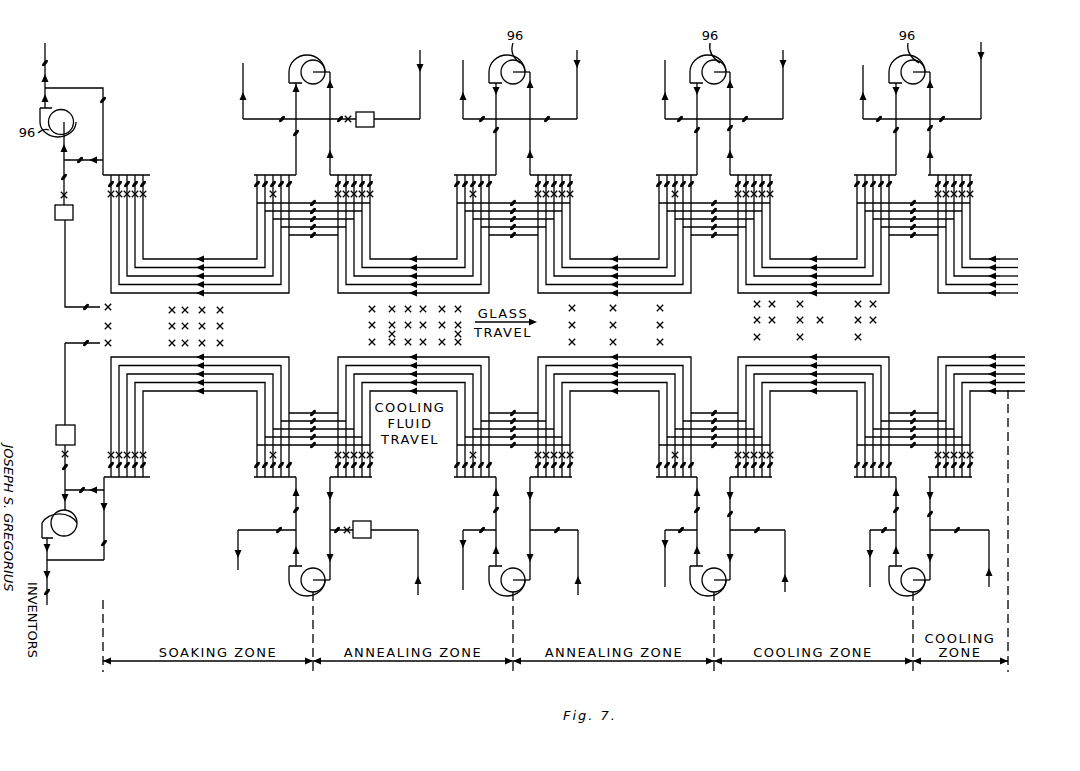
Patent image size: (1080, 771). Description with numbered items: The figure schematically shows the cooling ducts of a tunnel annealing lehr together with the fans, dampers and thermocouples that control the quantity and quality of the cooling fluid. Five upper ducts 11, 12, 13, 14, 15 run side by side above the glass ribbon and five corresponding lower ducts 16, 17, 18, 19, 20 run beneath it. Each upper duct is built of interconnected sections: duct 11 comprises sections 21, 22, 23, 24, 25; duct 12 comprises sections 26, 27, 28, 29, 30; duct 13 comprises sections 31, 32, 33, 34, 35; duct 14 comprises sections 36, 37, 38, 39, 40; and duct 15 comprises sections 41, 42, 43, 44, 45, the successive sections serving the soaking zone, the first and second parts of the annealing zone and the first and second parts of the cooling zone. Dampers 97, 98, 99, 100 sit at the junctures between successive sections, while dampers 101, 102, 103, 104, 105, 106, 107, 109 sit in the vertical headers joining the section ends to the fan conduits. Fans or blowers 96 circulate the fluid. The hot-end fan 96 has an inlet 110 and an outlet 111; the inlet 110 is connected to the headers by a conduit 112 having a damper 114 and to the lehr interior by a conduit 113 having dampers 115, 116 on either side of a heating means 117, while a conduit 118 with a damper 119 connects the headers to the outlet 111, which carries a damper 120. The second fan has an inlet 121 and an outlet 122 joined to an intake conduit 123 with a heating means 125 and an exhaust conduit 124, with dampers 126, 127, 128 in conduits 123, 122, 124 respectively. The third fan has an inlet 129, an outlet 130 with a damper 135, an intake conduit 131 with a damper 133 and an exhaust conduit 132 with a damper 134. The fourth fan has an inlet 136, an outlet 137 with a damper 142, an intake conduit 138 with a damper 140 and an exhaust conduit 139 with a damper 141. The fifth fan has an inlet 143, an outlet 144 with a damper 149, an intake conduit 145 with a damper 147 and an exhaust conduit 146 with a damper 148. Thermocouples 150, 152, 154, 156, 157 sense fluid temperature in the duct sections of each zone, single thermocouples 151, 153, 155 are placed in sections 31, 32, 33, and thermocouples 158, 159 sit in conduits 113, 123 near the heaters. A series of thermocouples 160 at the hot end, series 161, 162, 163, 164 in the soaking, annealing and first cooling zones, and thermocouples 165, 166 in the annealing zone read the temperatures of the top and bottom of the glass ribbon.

The duct 11 is at (1020, 259).
The duct 12 is at (1020, 267).
The duct 13 is at (1020, 276).
The duct 14 is at (1020, 285).
The duct 15 is at (1020, 293).
The duct 16 is at (1022, 391).
The duct 17 is at (1022, 383).
The duct 18 is at (1022, 374).
The duct 19 is at (1022, 365).
The duct 20 is at (1020, 357).
The duct section 21 is at (166, 259).
The duct section 22 is at (392, 259).
The duct section 23 is at (592, 259).
The duct section 24 is at (793, 259).
The duct section 25 is at (978, 259).
The duct section 26 is at (170, 267).
The duct section 27 is at (393, 267).
The duct section 28 is at (593, 267).
The duct section 29 is at (796, 267).
The duct section 30 is at (975, 268).
The duct section 31 is at (186, 276).
The duct section 32 is at (409, 276).
The duct section 33 is at (609, 276).
The duct section 34 is at (811, 276).
The duct section 35 is at (977, 277).
The duct section 36 is at (210, 284).
The duct section 37 is at (426, 284).
The duct section 38 is at (626, 284).
The duct section 39 is at (826, 284).
The duct section 40 is at (992, 285).
The duct section 41 is at (230, 293).
The duct section 42 is at (441, 293).
The duct section 43 is at (643, 293).
The duct section 44 is at (841, 293).
The duct section 45 is at (1012, 294).
The fan 96 is at (320, 63).
The damper 97 is at (318, 236).
The damper 98 is at (516, 236).
The damper 99 is at (716, 236).
The damper 100 is at (916, 236).
The damper 101 is at (148, 184).
The damper 102 is at (256, 184).
The damper 103 is at (372, 184).
The damper 104 is at (459, 184).
The damper 105 is at (572, 184).
The damper 106 is at (660, 184).
The damper 107 is at (770, 184).
The damper 109 is at (972, 184).
The inlet 110 is at (62, 148).
The outlet 111 is at (47, 46).
The conduit 112 is at (104, 158).
The conduit 113 is at (63, 262).
The damper 114 is at (81, 158).
The damper 115 is at (62, 177).
The damper 116 is at (86, 304).
The heating means 117 is at (55, 216).
The conduit 118 is at (104, 124).
The damper 119 is at (104, 100).
The damper 120 is at (43, 64).
The inlet 121 is at (331, 91).
The outlet 122 is at (295, 103).
The intake conduit 123 is at (419, 108).
The exhaust conduit 124 is at (243, 79).
The heating means 125 is at (368, 128).
The damper 126 is at (340, 122).
The damper 127 is at (282, 122).
The damper 128 is at (298, 131).
The inlet 129 is at (532, 140).
The outlet 130 is at (495, 142).
The intake conduit 131 is at (578, 104).
The exhaust conduit 132 is at (462, 106).
The damper 133 is at (548, 117).
The damper 134 is at (483, 117).
The damper 135 is at (498, 131).
The inlet 136 is at (733, 131).
The outlet 137 is at (696, 146).
The intake conduit 138 is at (784, 104).
The exhaust conduit 139 is at (664, 82).
The damper 140 is at (746, 117).
The damper 141 is at (679, 122).
The damper 142 is at (699, 129).
The inlet 143 is at (932, 129).
The outlet 144 is at (895, 161).
The intake conduit 145 is at (982, 80).
The exhaust conduit 146 is at (863, 80).
The damper 147 is at (944, 117).
The damper 148 is at (878, 122).
The damper 149 is at (898, 129).
The thermocouples 150 is at (148, 194).
The thermocouple 151 is at (270, 196).
The thermocouples 152 is at (372, 194).
The thermocouple 153 is at (472, 196).
The thermocouples 154 is at (572, 194).
The thermocouple 155 is at (673, 196).
The thermocouples 156 is at (770, 194).
The thermocouples 157 is at (972, 194).
The thermocouple 158 is at (62, 195).
The thermocouple 159 is at (351, 117).
The thermocouples 160 is at (112, 327).
The thermocouples 161 is at (224, 327).
The thermocouples 162 is at (369, 325).
The thermocouples 163 is at (569, 325).
The thermocouples 164 is at (803, 307).
The thermocouples 165 is at (397, 337).
The thermocouples 166 is at (664, 327).